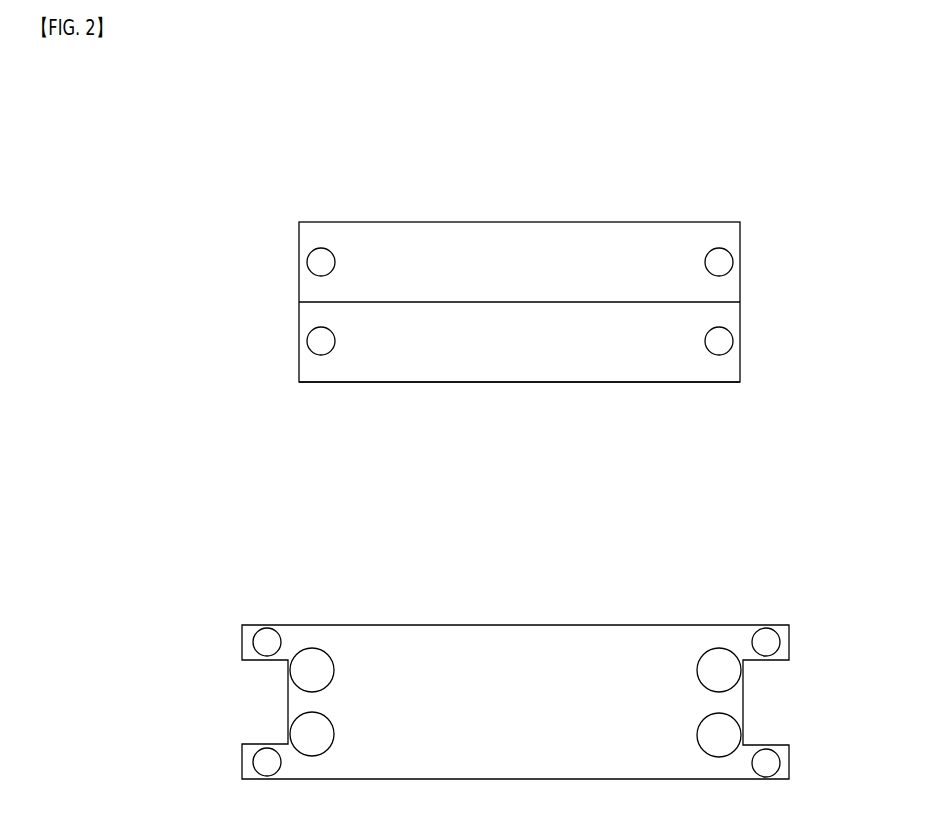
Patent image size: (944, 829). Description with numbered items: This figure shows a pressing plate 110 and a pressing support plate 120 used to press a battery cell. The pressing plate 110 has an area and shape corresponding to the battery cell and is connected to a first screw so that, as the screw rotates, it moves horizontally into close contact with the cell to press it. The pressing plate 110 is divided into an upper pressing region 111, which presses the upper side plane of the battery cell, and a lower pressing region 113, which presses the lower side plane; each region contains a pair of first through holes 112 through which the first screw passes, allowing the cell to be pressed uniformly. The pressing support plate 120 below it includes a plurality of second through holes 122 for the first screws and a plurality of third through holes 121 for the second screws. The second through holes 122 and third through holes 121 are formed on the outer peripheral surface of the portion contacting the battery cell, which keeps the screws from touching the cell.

The pressing plate 110 is at (316, 171).
The upper pressing region 111 is at (592, 233).
The first through holes 112 is at (719, 341).
The lower pressing region 113 is at (600, 367).
The pressing support plate 120 is at (234, 598).
The third through holes 121 is at (262, 645).
The second through holes 122 is at (722, 727).